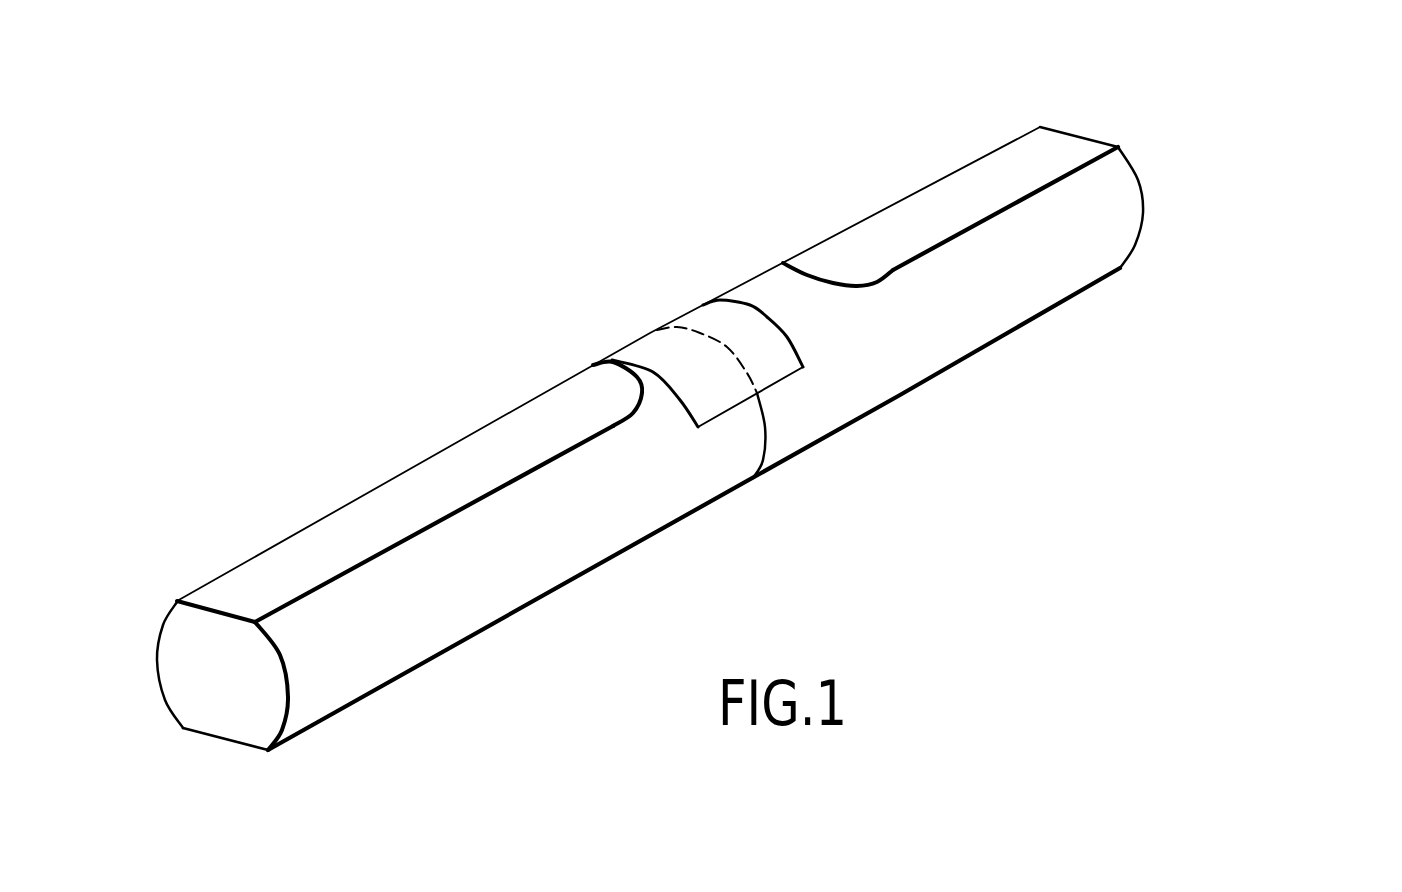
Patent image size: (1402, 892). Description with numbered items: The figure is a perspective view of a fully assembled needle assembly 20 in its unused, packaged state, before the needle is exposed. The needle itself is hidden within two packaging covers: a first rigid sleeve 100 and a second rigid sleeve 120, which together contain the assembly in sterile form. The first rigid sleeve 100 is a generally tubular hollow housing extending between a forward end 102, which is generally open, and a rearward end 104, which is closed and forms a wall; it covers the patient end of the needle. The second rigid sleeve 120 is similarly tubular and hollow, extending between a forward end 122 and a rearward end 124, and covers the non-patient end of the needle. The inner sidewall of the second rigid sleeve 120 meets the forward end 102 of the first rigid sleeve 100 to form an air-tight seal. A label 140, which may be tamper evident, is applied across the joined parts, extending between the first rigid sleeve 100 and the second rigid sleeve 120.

The needle assembly 20 is at (1292, 105).
The first rigid sleeve 100 is at (503, 590).
The forward end 102 is at (738, 473).
The rearward end 104 is at (240, 718).
The second rigid sleeve 120 is at (937, 345).
The forward end 122 is at (773, 450).
The rearward end 124 is at (1123, 212).
The label 140 is at (698, 318).